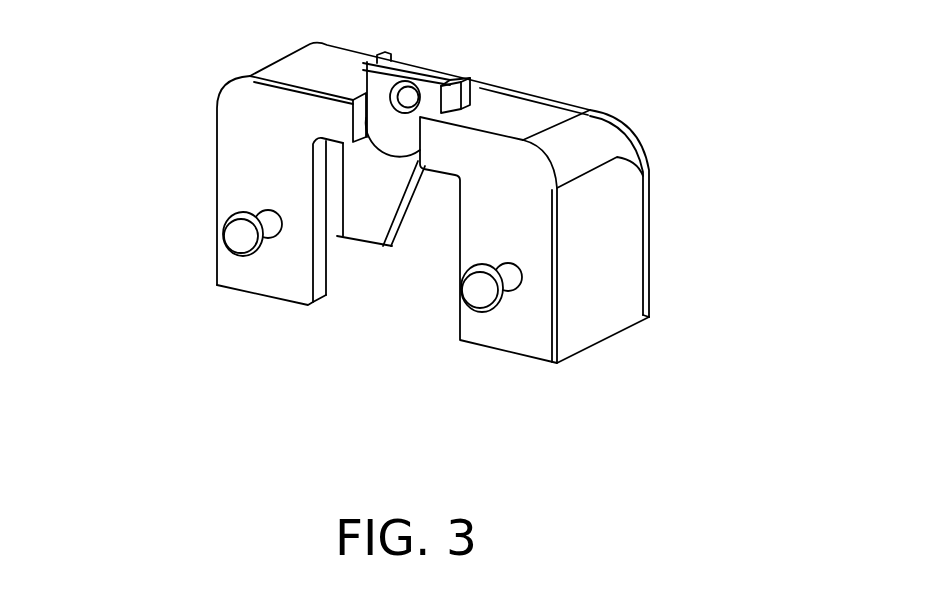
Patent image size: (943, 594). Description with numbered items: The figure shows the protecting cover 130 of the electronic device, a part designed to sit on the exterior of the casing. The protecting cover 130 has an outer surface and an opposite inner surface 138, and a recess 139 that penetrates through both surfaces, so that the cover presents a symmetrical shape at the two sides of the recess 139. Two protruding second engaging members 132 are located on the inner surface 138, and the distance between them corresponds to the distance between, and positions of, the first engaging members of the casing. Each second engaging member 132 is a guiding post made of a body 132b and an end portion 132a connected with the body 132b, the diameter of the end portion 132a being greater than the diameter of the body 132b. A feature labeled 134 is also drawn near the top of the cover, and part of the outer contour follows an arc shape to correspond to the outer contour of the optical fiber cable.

The protecting cover 130 is at (212, 66).
The second engaging member 132 is at (425, 265).
The end portion 132a is at (245, 237).
The body 132b is at (268, 213).
The top bracket with through hole 134 is at (403, 95).
The inner surface 138 is at (524, 177).
The recess 139 is at (390, 324).